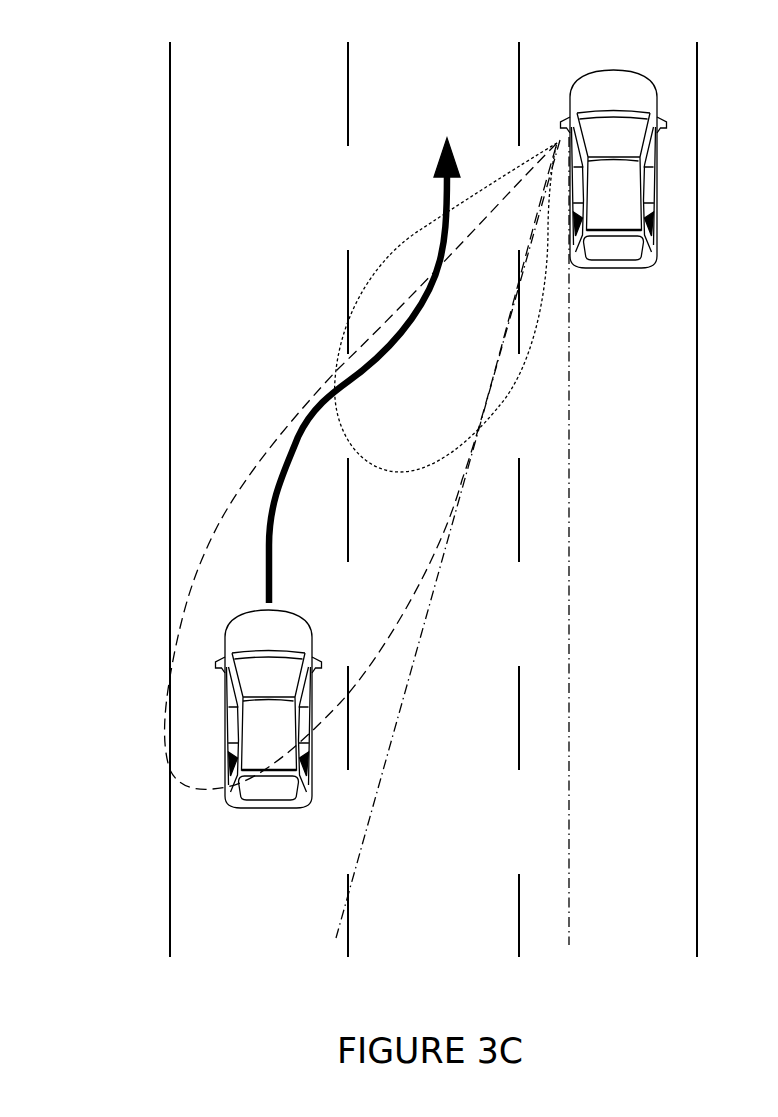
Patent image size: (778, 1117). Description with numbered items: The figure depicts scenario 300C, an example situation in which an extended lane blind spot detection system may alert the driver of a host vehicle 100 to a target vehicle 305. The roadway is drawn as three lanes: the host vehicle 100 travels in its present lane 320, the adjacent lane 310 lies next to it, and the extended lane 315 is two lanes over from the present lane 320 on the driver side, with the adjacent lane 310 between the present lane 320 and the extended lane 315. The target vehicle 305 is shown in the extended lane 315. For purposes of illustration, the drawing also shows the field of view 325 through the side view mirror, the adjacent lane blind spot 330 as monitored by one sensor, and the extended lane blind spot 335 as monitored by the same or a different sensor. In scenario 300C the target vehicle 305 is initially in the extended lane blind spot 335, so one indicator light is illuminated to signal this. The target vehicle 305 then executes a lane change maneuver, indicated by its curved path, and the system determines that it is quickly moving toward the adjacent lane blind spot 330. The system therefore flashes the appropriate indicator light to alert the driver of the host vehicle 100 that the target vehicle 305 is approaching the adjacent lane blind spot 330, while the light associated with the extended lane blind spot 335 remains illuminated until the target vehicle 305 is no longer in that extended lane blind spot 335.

The scenario 300C is at (96, 152).
The host vehicle 100 is at (608, 68).
The target vehicle 305 is at (266, 607).
The adjacent lane 310 is at (408, 48).
The extended lane 315 is at (234, 48).
The present lane 320 is at (553, 48).
The field of view 325 is at (571, 498).
The adjacent lane blind spot 330 is at (416, 243).
The extended lane blind spot 335 is at (292, 420).